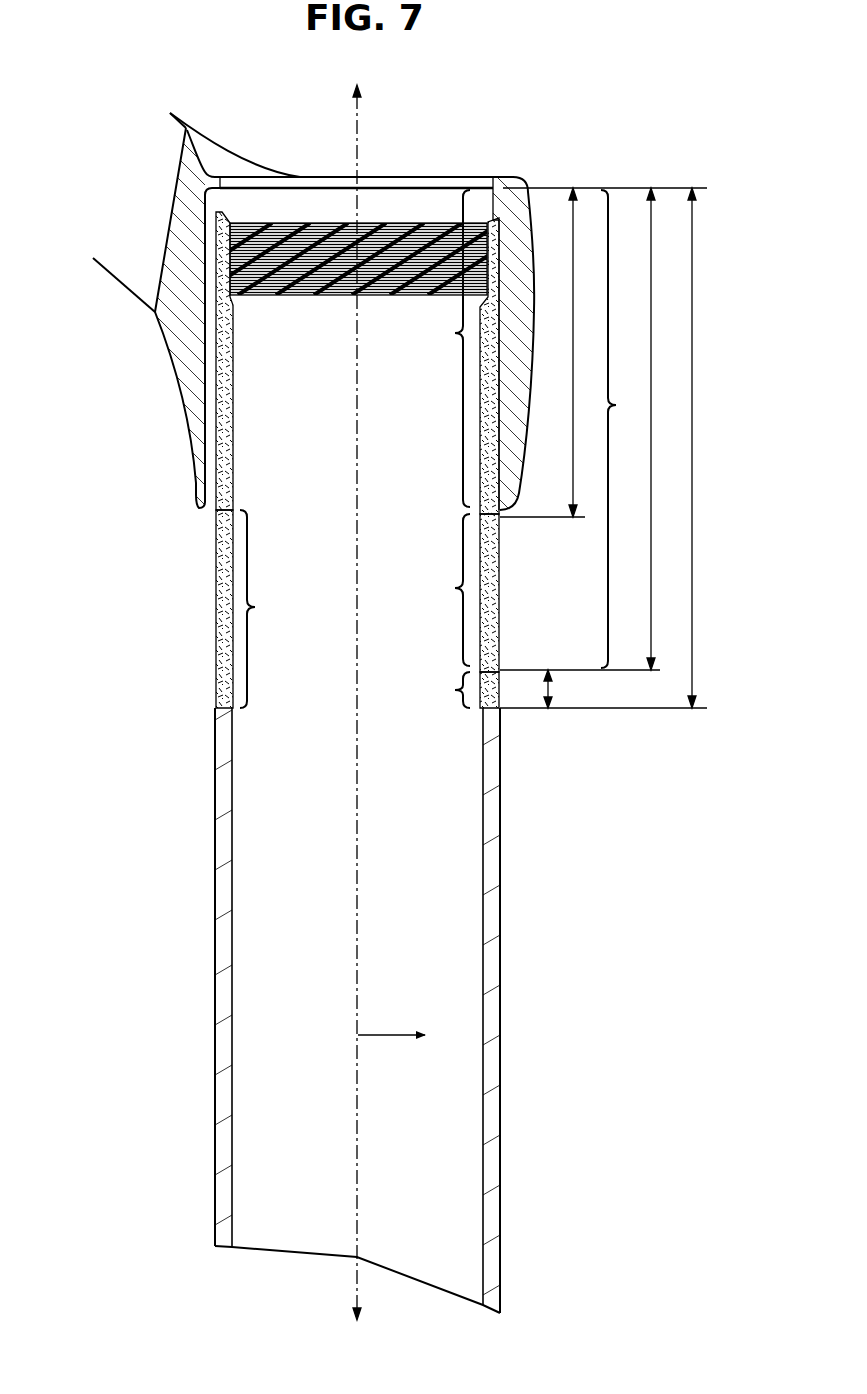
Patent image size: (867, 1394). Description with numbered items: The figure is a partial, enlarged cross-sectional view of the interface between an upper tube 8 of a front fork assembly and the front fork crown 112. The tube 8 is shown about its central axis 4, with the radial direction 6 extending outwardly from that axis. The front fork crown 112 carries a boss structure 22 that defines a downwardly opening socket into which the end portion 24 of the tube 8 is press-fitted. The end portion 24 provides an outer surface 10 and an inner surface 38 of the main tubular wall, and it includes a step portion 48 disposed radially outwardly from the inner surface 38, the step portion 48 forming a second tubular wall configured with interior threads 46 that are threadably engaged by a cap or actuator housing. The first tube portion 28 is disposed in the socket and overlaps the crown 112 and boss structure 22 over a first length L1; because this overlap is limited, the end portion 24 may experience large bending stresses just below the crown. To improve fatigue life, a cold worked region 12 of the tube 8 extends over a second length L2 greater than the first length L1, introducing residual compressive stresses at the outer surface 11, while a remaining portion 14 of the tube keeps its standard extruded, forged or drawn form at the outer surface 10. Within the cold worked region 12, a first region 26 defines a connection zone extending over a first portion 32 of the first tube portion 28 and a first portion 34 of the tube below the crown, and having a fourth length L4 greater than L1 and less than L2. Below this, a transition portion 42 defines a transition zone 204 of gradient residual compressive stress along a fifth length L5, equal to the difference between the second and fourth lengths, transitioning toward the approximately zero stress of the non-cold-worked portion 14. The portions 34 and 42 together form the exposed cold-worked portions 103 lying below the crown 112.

The central axis 4 is at (357, 1108).
The radial direction 6 is at (393, 1035).
The tube 8 is at (545, 1030).
The outer surface 10 is at (362, 1010).
The outer surface 11 is at (188, 609).
The cold worked region 12 is at (216, 627).
The remaining portion 14 is at (225, 977).
The boss structure 22 is at (180, 318).
The end portion 24 is at (227, 368).
The first region 26 is at (616, 405).
The first tube portion 28 is at (205, 337).
The first portion of the first tube portion 32 is at (455, 333).
The first portion of the second tube portion 34 is at (455, 588).
The inner surface 38 is at (232, 932).
The transition portion 42 is at (455, 690).
The interior threads 46 is at (430, 237).
The step portion 48 is at (494, 267).
The exposed cold-worked portions 103 is at (249, 607).
The front fork crown 112 is at (212, 147).
The transition zone 204 is at (439, 679).
The first length L1 is at (575, 330).
The second length L2 is at (694, 406).
The fourth length L4 is at (653, 366).
The fifth length L5 is at (552, 690).